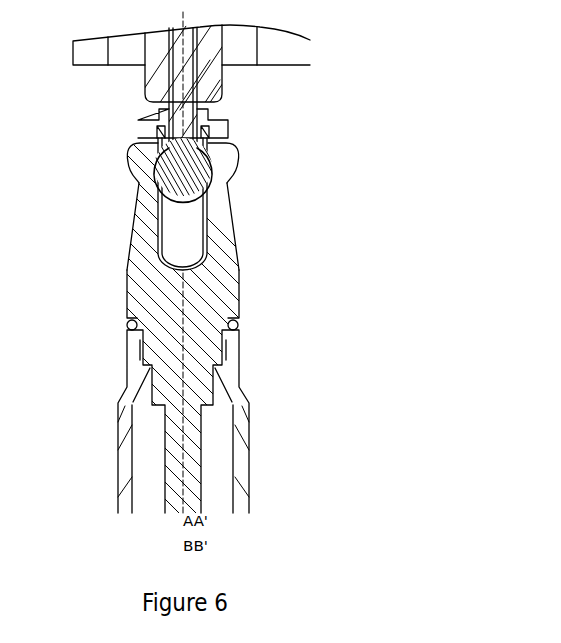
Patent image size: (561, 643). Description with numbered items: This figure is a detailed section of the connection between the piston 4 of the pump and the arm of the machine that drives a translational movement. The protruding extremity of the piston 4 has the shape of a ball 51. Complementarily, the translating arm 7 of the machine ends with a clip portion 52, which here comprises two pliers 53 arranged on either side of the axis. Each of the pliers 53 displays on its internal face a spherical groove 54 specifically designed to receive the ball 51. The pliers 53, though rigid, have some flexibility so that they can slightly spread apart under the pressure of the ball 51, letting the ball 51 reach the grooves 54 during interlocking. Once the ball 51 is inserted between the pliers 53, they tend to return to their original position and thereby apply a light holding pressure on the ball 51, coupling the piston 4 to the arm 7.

The piston 4 is at (187, 58).
The ball 51 is at (160, 175).
The clip portion 52 is at (178, 285).
The pliers 53 is at (229, 223).
The spherical groove 54 is at (210, 168).
The translating arm 7 is at (184, 436).